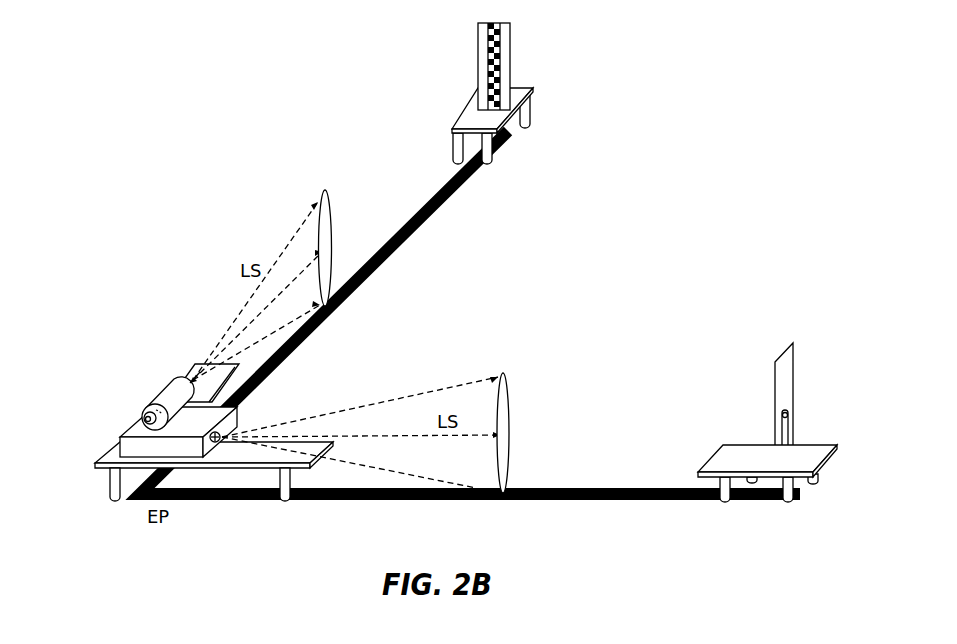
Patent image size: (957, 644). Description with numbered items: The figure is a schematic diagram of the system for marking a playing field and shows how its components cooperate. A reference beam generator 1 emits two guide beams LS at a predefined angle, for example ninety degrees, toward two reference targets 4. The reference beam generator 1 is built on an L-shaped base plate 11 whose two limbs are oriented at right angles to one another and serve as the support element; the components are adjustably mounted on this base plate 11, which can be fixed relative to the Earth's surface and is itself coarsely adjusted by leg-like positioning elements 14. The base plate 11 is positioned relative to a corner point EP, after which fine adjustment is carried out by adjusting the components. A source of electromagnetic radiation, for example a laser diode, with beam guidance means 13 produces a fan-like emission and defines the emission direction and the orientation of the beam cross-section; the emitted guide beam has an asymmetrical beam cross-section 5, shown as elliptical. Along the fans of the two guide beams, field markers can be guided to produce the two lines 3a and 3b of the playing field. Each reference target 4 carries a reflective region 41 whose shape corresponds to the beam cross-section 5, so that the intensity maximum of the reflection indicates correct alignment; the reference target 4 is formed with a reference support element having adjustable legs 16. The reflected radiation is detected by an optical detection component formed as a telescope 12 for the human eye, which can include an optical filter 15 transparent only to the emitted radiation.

The reference beam generator 1 is at (280, 403).
The line of the playing field 3a is at (413, 230).
The line of the playing field 3b is at (622, 488).
The reference target 4 is at (505, 48).
The reflective region 41 is at (488, 70).
The beam cross-section 5 is at (328, 215).
The base plate 11 is at (195, 371).
The telescope 12 is at (165, 393).
The beam guidance means 13 is at (178, 450).
The positioning elements 14 is at (290, 482).
The optical filter 15 is at (148, 418).
The adjustable legs 16 is at (483, 153).